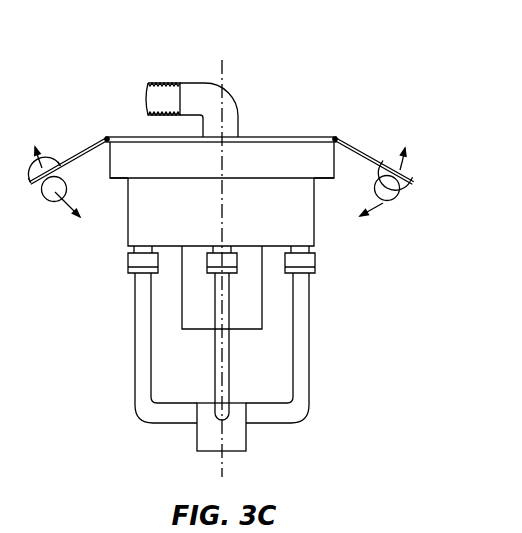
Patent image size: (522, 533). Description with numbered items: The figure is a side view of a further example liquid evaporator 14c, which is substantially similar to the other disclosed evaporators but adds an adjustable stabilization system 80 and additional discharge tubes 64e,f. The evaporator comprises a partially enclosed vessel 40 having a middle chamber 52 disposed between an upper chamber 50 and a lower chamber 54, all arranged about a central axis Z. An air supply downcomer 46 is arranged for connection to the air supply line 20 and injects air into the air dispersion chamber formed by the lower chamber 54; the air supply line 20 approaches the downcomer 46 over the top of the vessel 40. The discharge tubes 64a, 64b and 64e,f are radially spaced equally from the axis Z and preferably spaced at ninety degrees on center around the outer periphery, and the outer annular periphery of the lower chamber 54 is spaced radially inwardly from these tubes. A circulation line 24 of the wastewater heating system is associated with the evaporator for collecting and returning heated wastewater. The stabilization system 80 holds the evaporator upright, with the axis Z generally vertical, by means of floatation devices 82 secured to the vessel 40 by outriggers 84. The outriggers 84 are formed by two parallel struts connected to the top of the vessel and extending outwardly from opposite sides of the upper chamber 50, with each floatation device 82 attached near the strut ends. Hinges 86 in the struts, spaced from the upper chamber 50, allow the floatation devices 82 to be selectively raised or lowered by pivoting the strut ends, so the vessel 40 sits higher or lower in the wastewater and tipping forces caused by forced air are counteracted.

The liquid evaporator 14c is at (284, 74).
The air supply line 20 is at (150, 100).
The circulation line 24 is at (266, 136).
The partially enclosed vessel 40 is at (296, 137).
The air supply downcomer 46 is at (236, 121).
The upper chamber 50 is at (320, 180).
The middle chamber 52 is at (314, 236).
The lower chamber 54 is at (253, 296).
The discharge tube 64a is at (135, 384).
The discharge tube 64b is at (310, 383).
The additional discharge tubes 64e,f is at (214, 385).
The adjustable stabilization system 80 is at (418, 178).
The floatation device 82 is at (50, 203).
The outrigger 84 is at (364, 151).
The hinge 86 is at (105, 137).
The axis Z is at (222, 60).